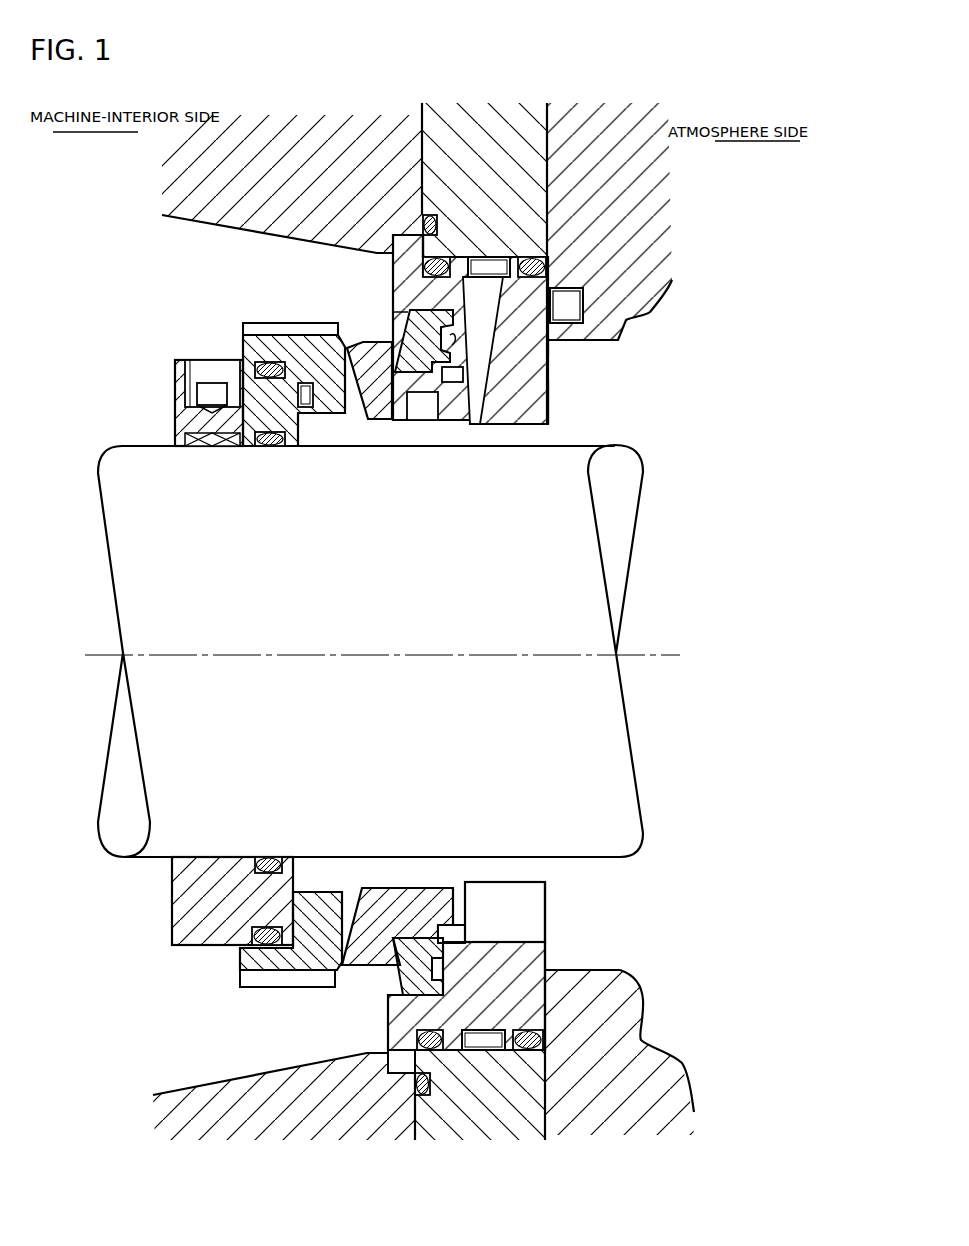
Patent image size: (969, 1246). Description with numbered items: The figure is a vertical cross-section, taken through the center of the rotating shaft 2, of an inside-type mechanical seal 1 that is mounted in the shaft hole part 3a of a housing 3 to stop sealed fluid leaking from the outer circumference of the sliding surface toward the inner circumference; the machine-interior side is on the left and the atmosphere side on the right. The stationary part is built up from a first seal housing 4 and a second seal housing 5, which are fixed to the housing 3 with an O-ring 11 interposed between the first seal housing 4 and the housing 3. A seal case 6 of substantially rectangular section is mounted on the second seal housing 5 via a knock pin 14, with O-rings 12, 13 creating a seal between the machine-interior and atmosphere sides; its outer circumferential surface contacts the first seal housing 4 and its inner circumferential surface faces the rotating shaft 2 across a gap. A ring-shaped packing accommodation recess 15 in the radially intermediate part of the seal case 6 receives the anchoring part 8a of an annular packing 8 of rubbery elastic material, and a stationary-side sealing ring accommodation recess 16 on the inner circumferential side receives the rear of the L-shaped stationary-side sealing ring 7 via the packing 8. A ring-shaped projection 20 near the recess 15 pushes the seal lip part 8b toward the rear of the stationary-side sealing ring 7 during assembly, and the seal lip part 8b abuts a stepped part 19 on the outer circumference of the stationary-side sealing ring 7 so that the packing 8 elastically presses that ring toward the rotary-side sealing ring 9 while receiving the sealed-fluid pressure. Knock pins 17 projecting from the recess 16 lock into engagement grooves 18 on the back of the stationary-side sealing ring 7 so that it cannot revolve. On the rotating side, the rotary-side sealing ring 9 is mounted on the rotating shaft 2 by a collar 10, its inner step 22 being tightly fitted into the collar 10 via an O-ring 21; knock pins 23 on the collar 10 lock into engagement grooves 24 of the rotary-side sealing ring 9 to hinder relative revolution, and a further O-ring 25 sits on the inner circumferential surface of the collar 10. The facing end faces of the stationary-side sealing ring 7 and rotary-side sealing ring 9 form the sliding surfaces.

The mechanical seal 1 is at (124, 304).
The rotating shaft 2 is at (456, 731).
The housing 3 is at (251, 146).
The shaft hole part 3a is at (240, 228).
The first seal housing 4 is at (493, 122).
The second seal housing 5 is at (653, 192).
The seal case 6 is at (546, 395).
The stationary-side sealing ring 7 is at (368, 421).
The annular packing 8 is at (525, 390).
The anchoring part 8a is at (413, 312).
The seal lip part 8b is at (424, 405).
The rotary-side sealing ring 9 is at (218, 425).
The collar 10 is at (138, 448).
The O-ring 11 is at (423, 213).
The O-ring 12 is at (418, 1028).
The O-ring 13 is at (548, 1040).
The knock pin 14 is at (573, 307).
The packing accommodation recess 15 is at (548, 352).
The stationary-side sealing ring accommodation recess 16 is at (548, 426).
The knock pin 17 is at (468, 395).
The engagement groove 18 is at (414, 374).
The stepped part 19 is at (408, 335).
The ring-shaped projection 20 is at (490, 410).
The O-ring 21 is at (208, 915).
The step 22 is at (238, 414).
The knock pin 23 is at (272, 440).
The engagement groove 24 is at (310, 408).
The O-ring 25 is at (262, 857).